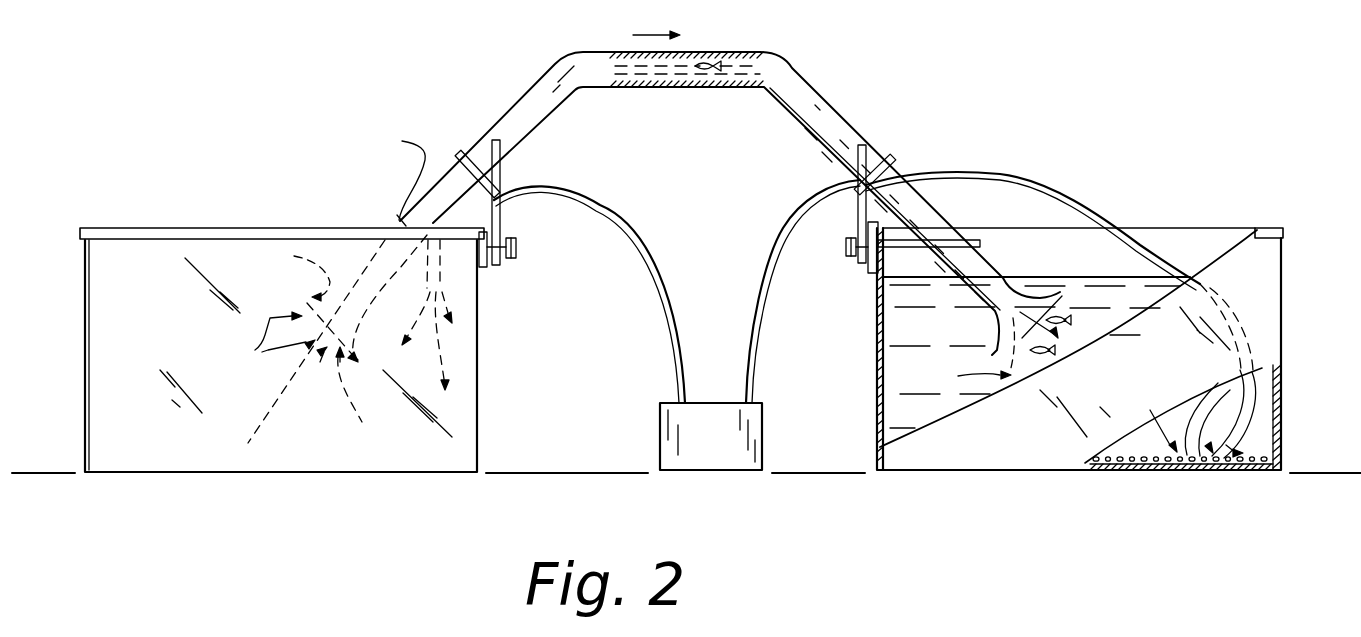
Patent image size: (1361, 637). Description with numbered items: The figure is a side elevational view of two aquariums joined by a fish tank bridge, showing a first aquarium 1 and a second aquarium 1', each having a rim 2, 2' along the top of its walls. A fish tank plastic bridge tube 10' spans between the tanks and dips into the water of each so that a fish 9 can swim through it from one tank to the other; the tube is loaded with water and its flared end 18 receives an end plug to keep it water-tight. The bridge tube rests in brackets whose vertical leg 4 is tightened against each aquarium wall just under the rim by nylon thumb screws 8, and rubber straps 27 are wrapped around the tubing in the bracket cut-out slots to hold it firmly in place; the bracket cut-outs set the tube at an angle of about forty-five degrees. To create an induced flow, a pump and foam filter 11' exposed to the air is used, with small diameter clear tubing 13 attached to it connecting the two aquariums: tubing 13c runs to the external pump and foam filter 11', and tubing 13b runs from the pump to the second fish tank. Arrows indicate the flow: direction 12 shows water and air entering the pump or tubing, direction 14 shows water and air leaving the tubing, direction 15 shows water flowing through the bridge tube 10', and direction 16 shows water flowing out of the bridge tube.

The aquarium 1 is at (255, 356).
The second aquarium 1' is at (1106, 349).
The rim 2 is at (282, 209).
The rim of second aquarium 2' is at (1292, 210).
The vertical leg of the bracket 4 is at (502, 180).
The thumb screws 8 is at (516, 248).
The fish 9 is at (712, 60).
The fish tank plastic bridge tube 10' is at (728, 193).
The pump and foam filter 11' is at (677, 417).
The direction of flow of water and air into the pump or tubing 12 is at (1292, 415).
The small diameter clear tubing 13 is at (1092, 202).
The small diameter tubing to second fish tank 13b is at (622, 210).
The small diameter tubing to external pump 13c is at (796, 220).
The direction of flow of water and air out of the tubing 14 is at (402, 312).
The direction of flow of water through the bridge tube 15 is at (298, 341).
The direction of flow of water out of the bridge tube 16 is at (968, 355).
The flared end of tubing 18 is at (992, 317).
The rubber straps 27 is at (456, 156).